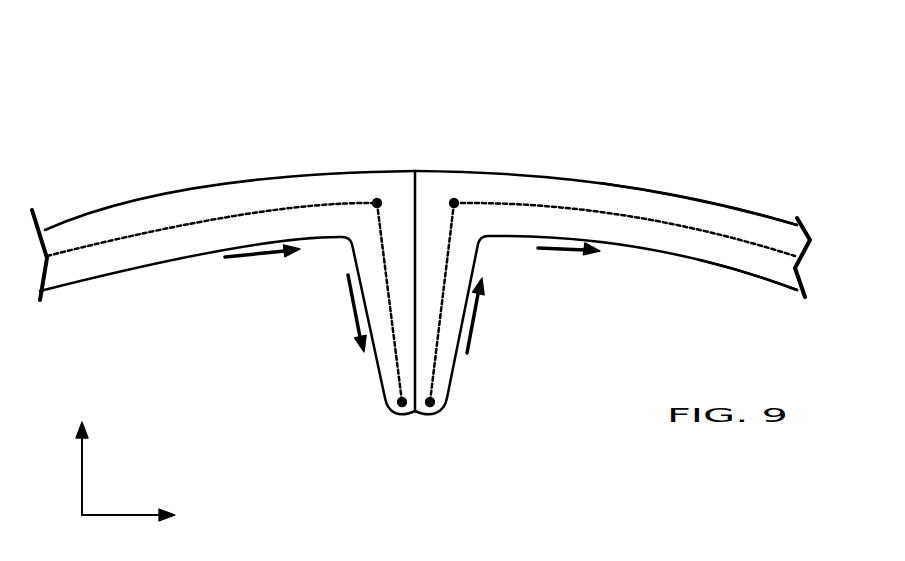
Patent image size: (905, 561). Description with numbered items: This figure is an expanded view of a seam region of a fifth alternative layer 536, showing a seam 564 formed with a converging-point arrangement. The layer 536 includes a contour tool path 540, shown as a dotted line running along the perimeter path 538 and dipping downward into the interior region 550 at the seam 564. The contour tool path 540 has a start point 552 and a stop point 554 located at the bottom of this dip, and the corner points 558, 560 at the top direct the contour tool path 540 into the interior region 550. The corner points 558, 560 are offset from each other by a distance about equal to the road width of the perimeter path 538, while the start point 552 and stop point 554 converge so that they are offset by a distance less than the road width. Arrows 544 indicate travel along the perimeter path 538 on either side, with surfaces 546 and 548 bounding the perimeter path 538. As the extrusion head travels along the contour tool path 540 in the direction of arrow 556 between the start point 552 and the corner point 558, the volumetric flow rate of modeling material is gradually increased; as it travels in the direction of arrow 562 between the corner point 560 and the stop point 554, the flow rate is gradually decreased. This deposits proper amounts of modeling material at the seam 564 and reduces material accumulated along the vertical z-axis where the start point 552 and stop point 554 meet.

The layer 536 is at (643, 62).
The perimeter path 538 is at (578, 178).
The contour tool path 540 is at (120, 237).
The lateral material flow direction 544 is at (262, 256).
The outer surface 546 is at (698, 200).
The inner surface 548 is at (773, 282).
The interior region 550 is at (308, 503).
The start point 552 is at (432, 404).
The stop point 554 is at (396, 402).
The arrow 556 is at (473, 322).
The corner point 558 is at (454, 203).
The corner point 560 is at (377, 203).
The arrow 562 is at (348, 292).
The seam 564 is at (412, 171).